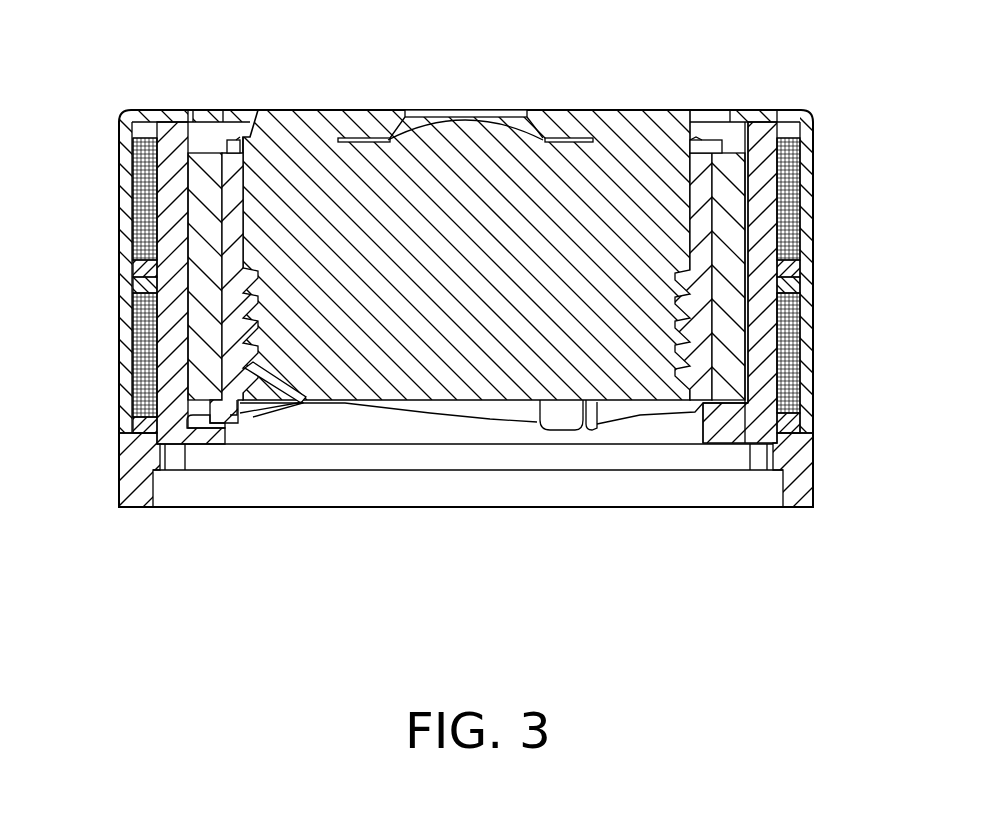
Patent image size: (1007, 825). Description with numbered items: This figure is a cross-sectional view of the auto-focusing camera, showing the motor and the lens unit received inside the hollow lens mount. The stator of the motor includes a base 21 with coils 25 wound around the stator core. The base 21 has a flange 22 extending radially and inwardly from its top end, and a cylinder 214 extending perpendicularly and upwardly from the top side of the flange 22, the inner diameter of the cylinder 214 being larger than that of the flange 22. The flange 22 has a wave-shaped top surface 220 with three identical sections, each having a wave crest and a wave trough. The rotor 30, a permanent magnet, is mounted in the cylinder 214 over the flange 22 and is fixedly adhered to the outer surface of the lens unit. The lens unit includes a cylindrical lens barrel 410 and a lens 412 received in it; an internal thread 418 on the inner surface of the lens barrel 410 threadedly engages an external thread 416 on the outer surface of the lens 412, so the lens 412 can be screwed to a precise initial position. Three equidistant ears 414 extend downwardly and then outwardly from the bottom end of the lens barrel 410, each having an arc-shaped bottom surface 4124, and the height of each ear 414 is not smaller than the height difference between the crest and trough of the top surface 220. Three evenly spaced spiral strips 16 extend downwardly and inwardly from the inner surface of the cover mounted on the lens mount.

The spiral strip 16 is at (712, 140).
The base 21 is at (790, 477).
The flange 22 is at (722, 428).
The coils 25 is at (795, 187).
The rotor 30 is at (160, 232).
The cylinder 214 is at (765, 337).
The top surface 220 is at (201, 428).
The lens barrel 410 is at (212, 150).
The lens 412 is at (310, 195).
The ear 414 is at (562, 413).
The external thread 416 is at (300, 404).
The internal thread 418 is at (262, 400).
The bottom surface 4124 is at (582, 433).